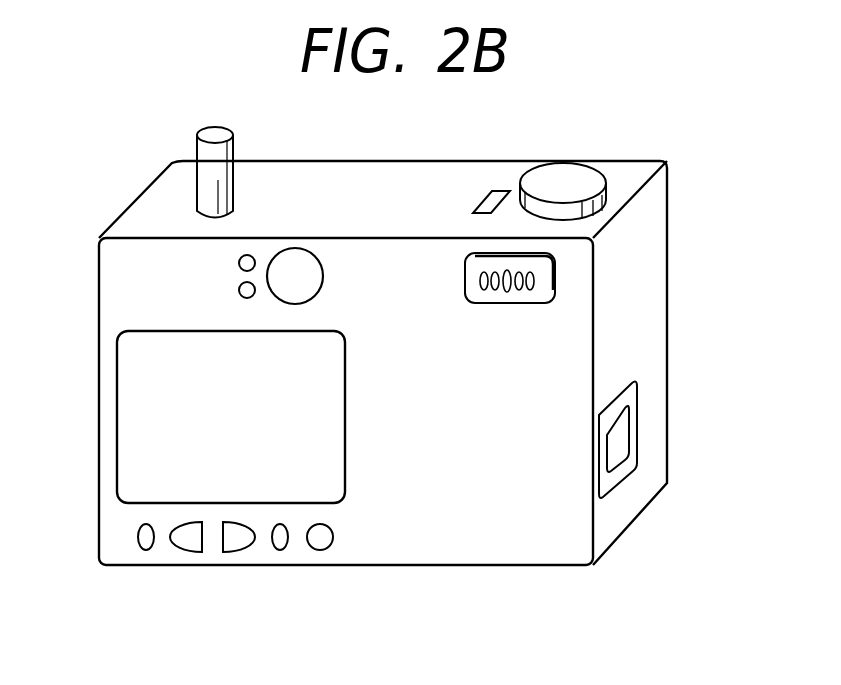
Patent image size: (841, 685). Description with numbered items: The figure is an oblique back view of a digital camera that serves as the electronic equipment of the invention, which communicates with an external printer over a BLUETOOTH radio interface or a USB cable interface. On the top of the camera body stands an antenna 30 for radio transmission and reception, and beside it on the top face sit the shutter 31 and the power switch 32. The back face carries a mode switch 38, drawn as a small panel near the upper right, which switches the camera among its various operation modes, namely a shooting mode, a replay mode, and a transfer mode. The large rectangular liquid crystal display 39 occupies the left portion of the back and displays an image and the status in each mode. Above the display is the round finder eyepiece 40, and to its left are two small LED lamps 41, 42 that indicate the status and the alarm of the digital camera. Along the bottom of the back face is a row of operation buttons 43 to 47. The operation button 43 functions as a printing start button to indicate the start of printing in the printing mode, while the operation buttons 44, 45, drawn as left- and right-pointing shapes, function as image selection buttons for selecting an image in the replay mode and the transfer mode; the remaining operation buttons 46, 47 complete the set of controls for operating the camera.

The antenna 30 is at (220, 157).
The shutter 31 is at (568, 172).
The power switch 32 is at (500, 192).
The mode switch 38 is at (543, 283).
The liquid crystal display 39 is at (137, 391).
The finder eyepiece 40 is at (313, 280).
The LED lamp 41 is at (238, 263).
The LED lamp 42 is at (238, 290).
The operation button 43 is at (146, 548).
The operation button 44 is at (187, 546).
The operation button 45 is at (237, 546).
The operation button 46 is at (280, 548).
The operation button 47 is at (320, 548).